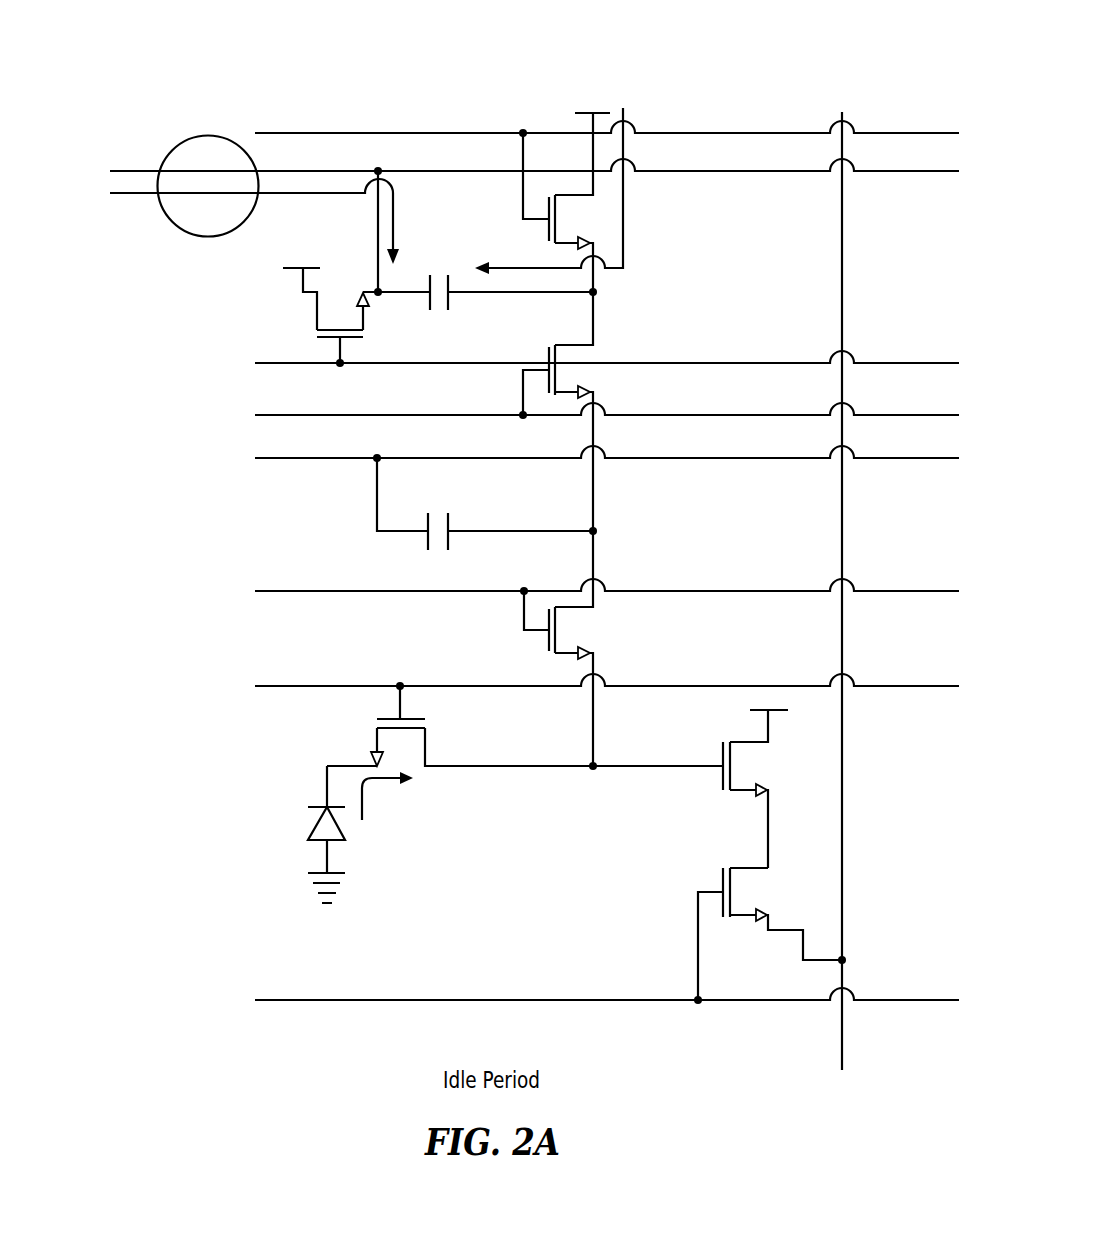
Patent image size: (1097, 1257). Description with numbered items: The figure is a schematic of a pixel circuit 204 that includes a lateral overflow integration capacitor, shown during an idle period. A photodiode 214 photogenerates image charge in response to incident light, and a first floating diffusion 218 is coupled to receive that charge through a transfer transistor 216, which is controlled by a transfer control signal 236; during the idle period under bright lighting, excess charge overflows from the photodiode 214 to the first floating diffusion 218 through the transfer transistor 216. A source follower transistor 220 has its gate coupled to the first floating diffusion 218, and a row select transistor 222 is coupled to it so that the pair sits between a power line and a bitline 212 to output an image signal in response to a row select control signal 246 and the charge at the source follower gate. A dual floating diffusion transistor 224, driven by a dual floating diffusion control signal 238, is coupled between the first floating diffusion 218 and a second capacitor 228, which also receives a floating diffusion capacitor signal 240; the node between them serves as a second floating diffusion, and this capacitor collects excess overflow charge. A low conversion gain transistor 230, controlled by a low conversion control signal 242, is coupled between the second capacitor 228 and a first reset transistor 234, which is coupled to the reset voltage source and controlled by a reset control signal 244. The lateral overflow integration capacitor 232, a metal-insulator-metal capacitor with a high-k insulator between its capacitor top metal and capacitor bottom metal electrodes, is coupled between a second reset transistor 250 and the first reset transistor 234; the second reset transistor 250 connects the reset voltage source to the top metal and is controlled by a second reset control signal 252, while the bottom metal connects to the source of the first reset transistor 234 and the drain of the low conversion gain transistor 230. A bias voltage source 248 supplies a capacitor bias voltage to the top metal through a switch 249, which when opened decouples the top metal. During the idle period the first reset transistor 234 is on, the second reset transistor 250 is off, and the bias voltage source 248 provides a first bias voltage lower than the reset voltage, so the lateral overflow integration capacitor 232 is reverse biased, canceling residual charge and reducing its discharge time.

The pixel circuit 204 is at (888, 44).
The bitline 212 is at (843, 247).
The photodiode 214 is at (338, 845).
The transfer transistor 216 is at (377, 740).
The first floating diffusion FD1 218 is at (527, 768).
The source follower transistor 220 is at (722, 760).
The row select transistor 222 is at (722, 884).
The dual floating diffusion DFD transistor 224 is at (545, 633).
The second capacitor 228 is at (425, 540).
The low conversion gain transistor 230 is at (548, 357).
The lateral overflow integration capacitor (LOFIC) 232 is at (438, 273).
The first reset transistor 234 is at (545, 232).
The transfer control signal TX 236 is at (237, 703).
The dual floating diffusion control line DFD 238 is at (230, 578).
The floating diffusion capacitor signal FDC 240 is at (228, 478).
The low conversion control signal LFG 242 is at (230, 400).
The reset control signal RSTG 244 is at (194, 100).
The row select control signal RS 246 is at (235, 985).
The bias voltage source 248 is at (76, 152).
The switch SW1 249 is at (196, 236).
The second reset transistor 250 is at (315, 318).
The second reset control signal RST2 252 is at (140, 350).